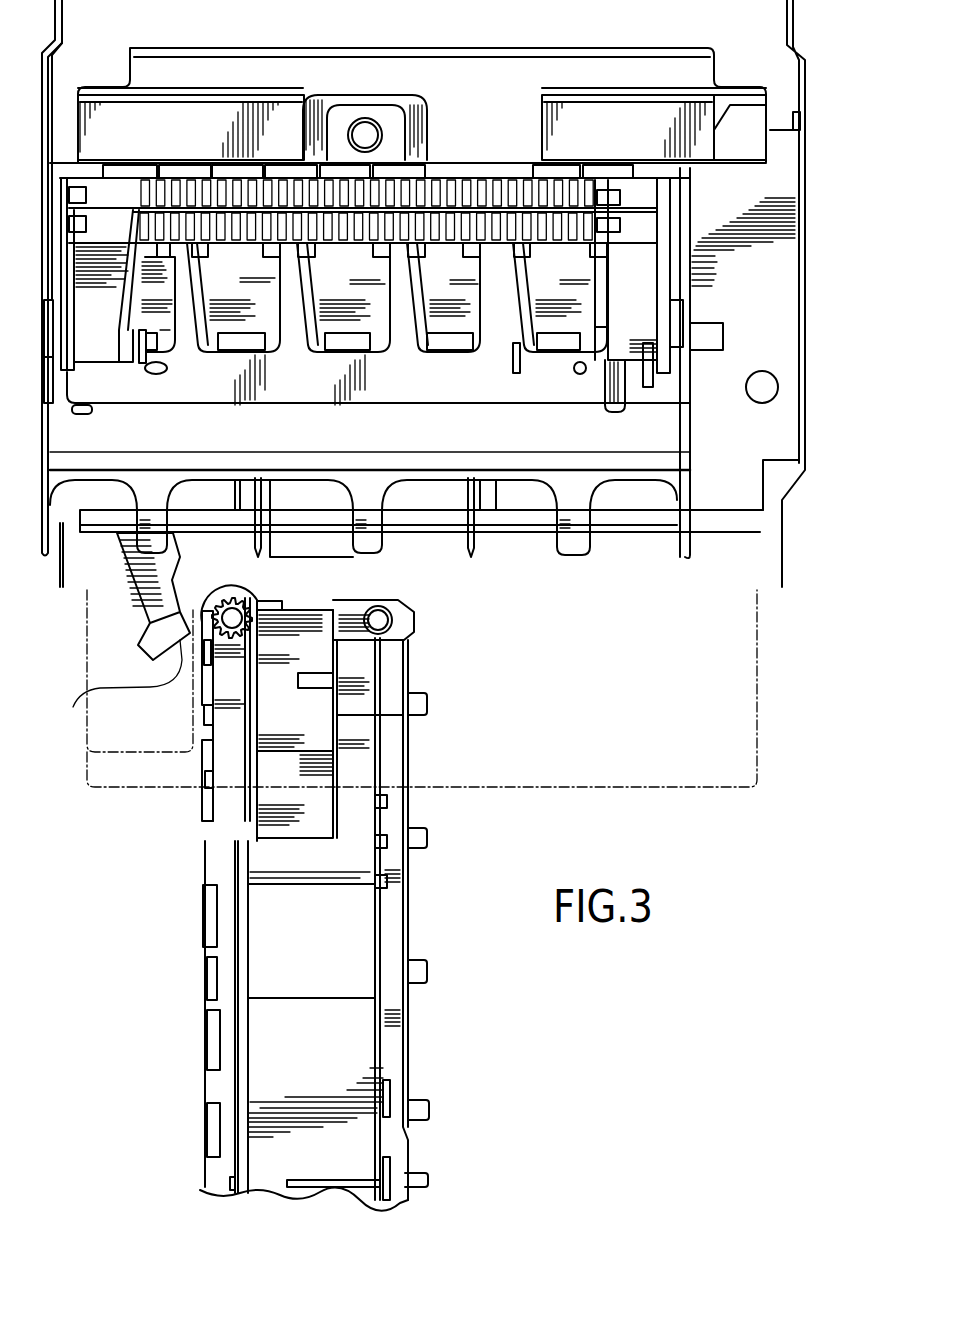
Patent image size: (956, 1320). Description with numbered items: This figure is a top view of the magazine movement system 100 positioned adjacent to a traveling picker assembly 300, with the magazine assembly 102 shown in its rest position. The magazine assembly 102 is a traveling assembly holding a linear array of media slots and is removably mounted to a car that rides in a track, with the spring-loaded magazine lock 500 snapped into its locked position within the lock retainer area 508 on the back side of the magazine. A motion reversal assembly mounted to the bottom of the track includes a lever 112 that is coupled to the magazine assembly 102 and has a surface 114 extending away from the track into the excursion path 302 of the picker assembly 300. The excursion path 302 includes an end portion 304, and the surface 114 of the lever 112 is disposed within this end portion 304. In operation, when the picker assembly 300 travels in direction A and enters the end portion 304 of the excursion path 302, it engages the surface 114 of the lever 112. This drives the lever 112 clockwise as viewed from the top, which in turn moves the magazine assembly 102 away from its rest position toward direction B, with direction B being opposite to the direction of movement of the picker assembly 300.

The magazine movement system 100 is at (773, 233).
The magazine assembly 102 is at (667, 423).
The lever 112 is at (133, 597).
The surface 114 is at (205, 718).
The picker assembly 300 is at (340, 927).
The excursion path 302 is at (447, 787).
The end portion 304 is at (140, 752).
The magazine lock 500 is at (341, 123).
The lock retainer area 508 is at (410, 104).
The direction A is at (125, 752).
The direction B is at (800, 290).